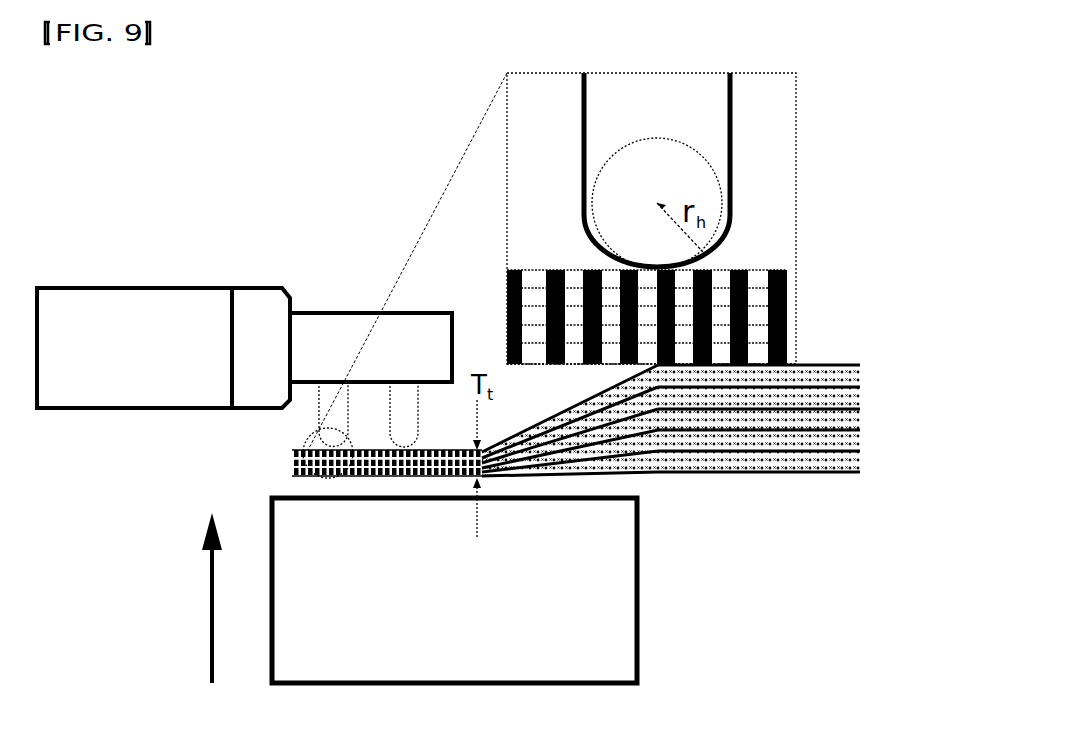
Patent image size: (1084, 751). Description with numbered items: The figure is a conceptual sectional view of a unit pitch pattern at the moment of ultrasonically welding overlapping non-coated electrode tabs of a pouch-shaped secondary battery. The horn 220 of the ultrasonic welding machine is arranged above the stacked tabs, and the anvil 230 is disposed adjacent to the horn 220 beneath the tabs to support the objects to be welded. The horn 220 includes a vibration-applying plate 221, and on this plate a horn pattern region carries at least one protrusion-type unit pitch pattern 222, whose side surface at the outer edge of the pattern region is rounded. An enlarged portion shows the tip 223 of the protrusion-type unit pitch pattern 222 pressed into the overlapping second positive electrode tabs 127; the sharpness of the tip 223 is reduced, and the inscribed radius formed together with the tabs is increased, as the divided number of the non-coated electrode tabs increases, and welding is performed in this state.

The horn 220 is at (194, 270).
The vibration-applying plate 221 is at (434, 366).
The protrusion-type unit pitch pattern 222 is at (305, 405).
The tip 223 is at (588, 248).
The second positive electrode tabs 127 is at (865, 303).
The anvil 230 is at (652, 593).